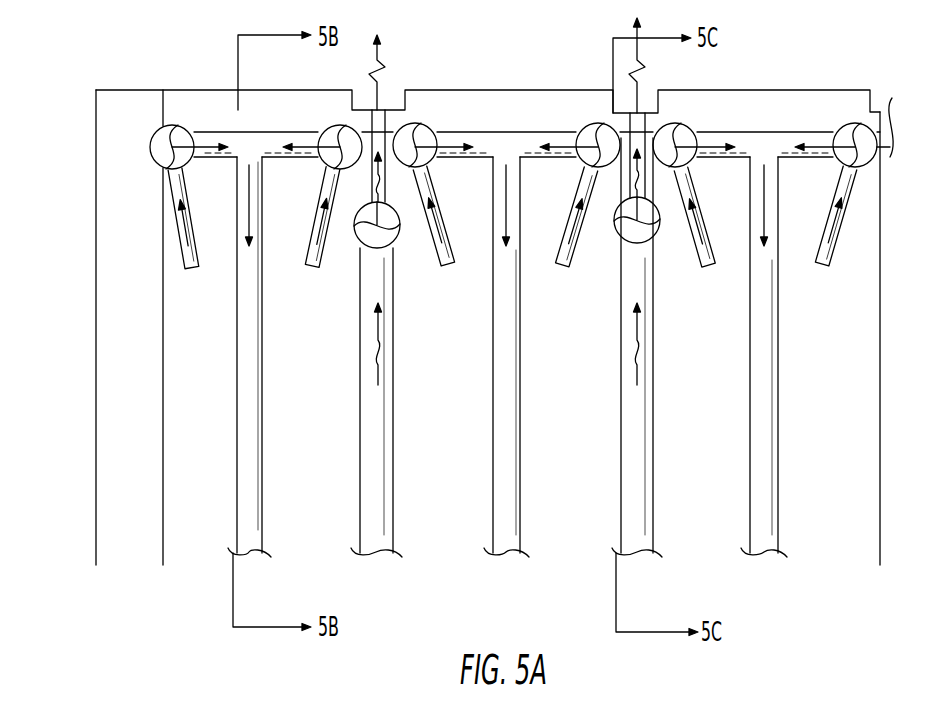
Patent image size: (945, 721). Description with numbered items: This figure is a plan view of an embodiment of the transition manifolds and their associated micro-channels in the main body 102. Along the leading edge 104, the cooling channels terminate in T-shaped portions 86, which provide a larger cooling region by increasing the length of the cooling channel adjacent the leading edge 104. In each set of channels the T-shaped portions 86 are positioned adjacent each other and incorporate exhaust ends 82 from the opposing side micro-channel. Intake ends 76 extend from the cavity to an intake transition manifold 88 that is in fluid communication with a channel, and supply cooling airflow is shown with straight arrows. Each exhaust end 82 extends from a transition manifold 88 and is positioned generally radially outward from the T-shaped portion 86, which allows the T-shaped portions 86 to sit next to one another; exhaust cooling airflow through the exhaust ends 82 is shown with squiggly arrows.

The intake end 76 is at (188, 272).
The exhaust end 82 is at (379, 88).
The T-shaped portion 86 is at (228, 139).
The transition manifold 88 is at (180, 133).
The main body 102 is at (207, 454).
The leading edge 104 is at (433, 93).